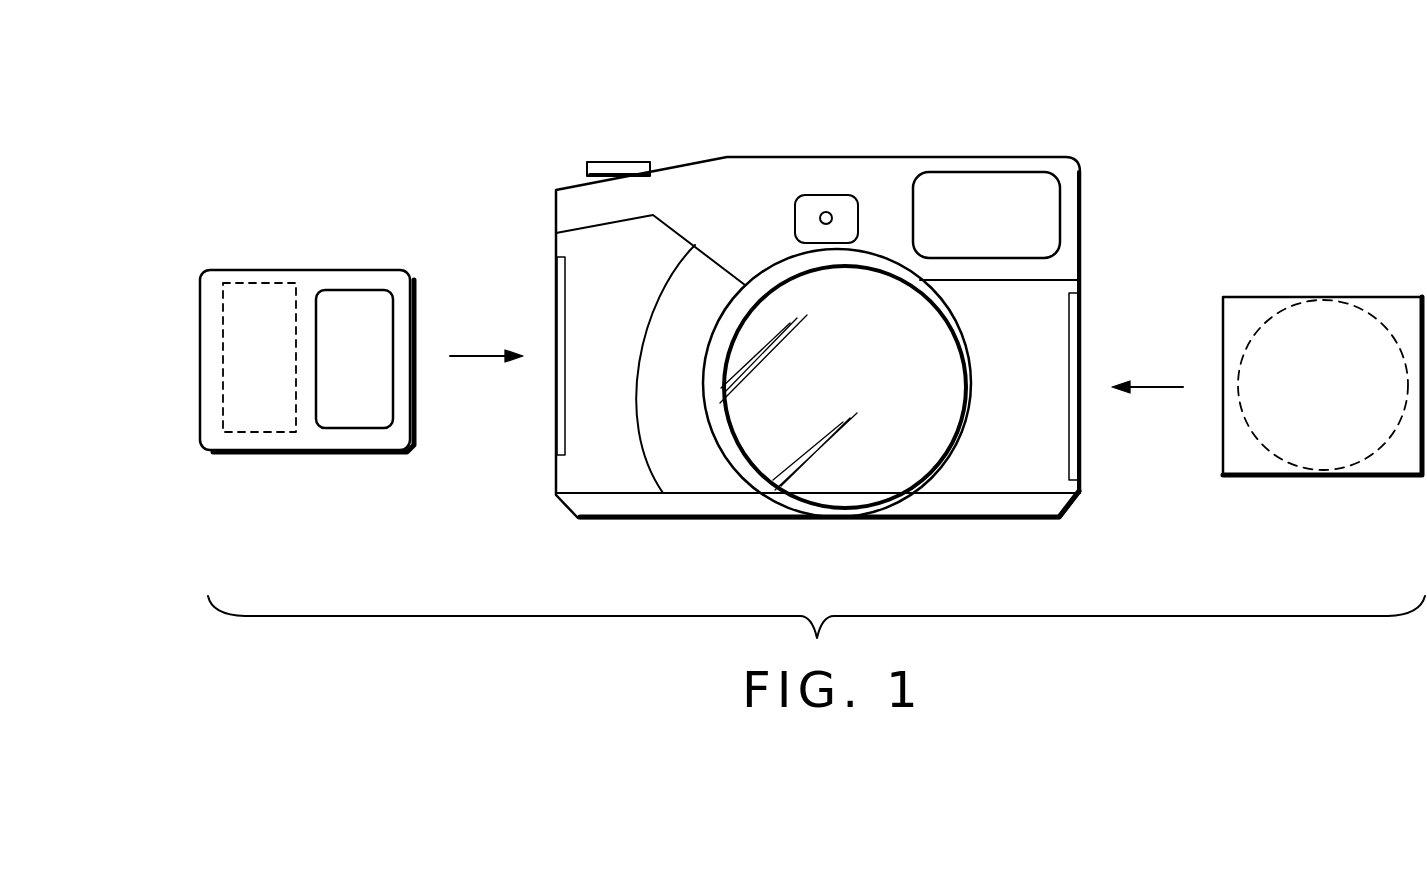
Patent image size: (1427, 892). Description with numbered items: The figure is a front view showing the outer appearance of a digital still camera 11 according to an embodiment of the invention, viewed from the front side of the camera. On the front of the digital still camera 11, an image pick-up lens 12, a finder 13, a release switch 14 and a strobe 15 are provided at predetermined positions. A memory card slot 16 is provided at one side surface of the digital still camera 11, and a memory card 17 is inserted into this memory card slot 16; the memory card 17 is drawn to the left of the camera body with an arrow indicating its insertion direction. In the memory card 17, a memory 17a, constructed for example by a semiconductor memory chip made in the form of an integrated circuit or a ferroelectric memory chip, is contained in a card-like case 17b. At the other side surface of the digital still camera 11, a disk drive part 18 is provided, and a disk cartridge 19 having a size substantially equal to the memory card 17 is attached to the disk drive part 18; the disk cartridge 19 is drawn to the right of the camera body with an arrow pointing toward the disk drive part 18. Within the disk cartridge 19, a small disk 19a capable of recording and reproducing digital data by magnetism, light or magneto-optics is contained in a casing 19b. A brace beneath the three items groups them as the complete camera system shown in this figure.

The digital still camera 11 is at (748, 112).
The image pick-up lens 12 is at (838, 490).
The finder 13 is at (826, 192).
The release switch 14 is at (614, 160).
The strobe 15 is at (985, 182).
The memory card slot 16 is at (553, 290).
The memory card 17 is at (185, 357).
The memory 17a is at (265, 277).
The card-like case 17b is at (355, 268).
The disk drive part 18 is at (1083, 322).
The disk cartridge 19 is at (1310, 287).
The small disk 19a is at (1365, 458).
The casing 19b is at (1253, 470).